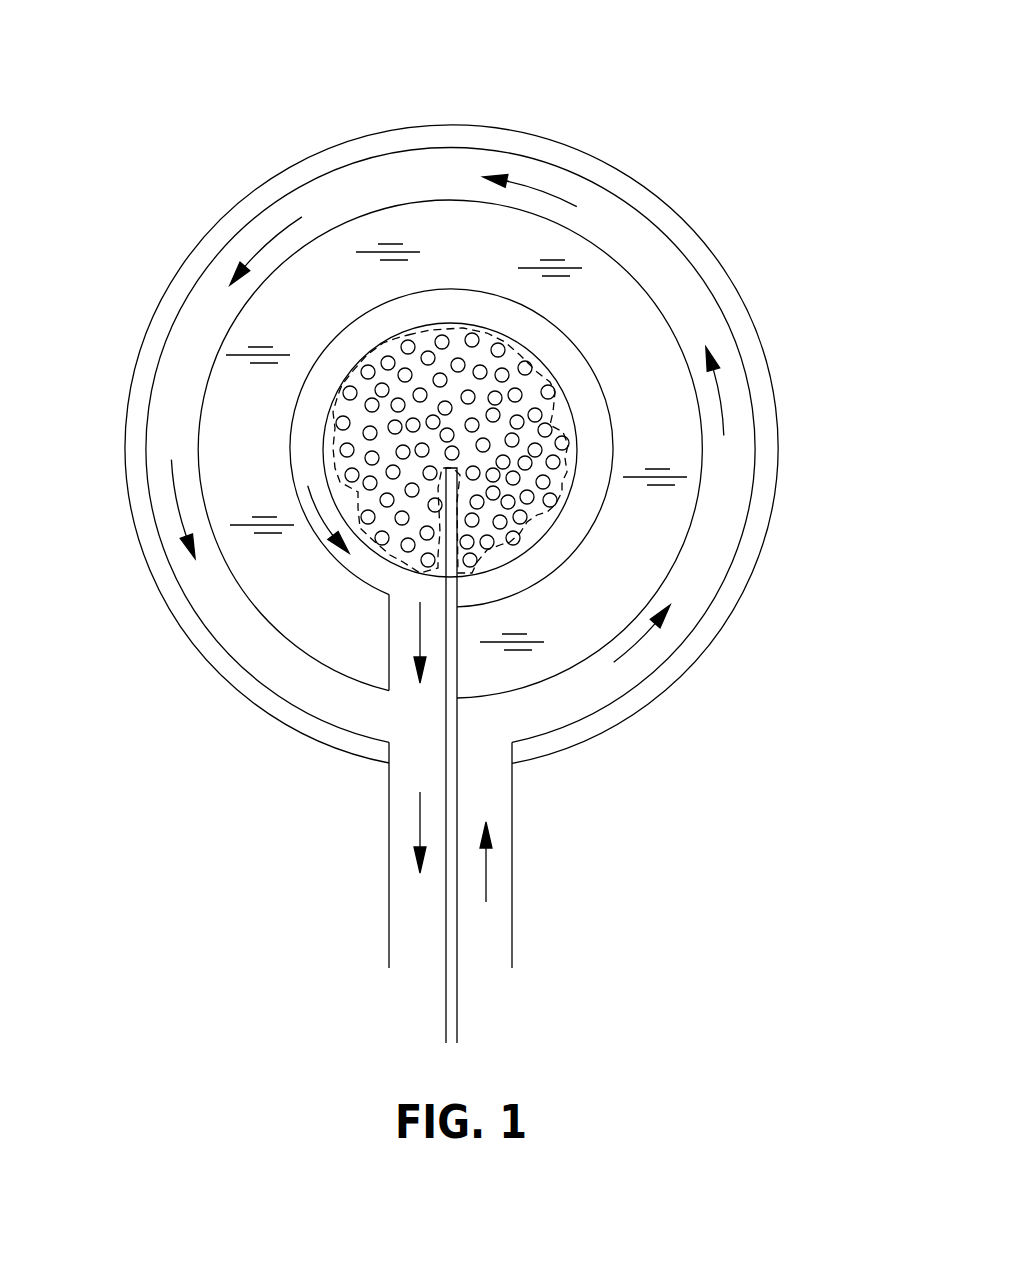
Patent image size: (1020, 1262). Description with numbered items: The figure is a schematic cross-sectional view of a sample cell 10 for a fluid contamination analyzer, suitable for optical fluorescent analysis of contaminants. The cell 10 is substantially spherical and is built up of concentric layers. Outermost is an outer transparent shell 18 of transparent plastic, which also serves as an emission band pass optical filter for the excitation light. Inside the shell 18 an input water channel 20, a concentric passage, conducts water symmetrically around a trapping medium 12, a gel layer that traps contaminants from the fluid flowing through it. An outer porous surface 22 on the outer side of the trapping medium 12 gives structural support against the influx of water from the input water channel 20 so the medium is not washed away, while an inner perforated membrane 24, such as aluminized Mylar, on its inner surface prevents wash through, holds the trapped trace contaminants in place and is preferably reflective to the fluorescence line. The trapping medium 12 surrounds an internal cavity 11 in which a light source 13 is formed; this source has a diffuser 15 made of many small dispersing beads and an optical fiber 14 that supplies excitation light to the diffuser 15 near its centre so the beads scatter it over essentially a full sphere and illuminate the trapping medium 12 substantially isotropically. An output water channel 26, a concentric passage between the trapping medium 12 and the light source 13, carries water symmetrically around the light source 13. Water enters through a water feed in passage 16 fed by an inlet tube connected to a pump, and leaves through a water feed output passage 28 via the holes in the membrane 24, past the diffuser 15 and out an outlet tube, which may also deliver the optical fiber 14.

The sample cell 10 is at (665, 70).
The internal cavity 11 is at (575, 312).
The trapping medium 12 is at (610, 283).
The light source 13 is at (323, 422).
The optical fiber 14 is at (447, 1013).
The diffuser 15 is at (398, 345).
The water feed in passage 16 is at (492, 927).
The outer transparent shell 18 is at (668, 690).
The input water channel 20 is at (710, 542).
The outer porous surface 22 is at (660, 316).
The inner perforated membrane 24 is at (425, 292).
The output water channel 26 is at (332, 367).
The water feed output passage 28 is at (407, 905).